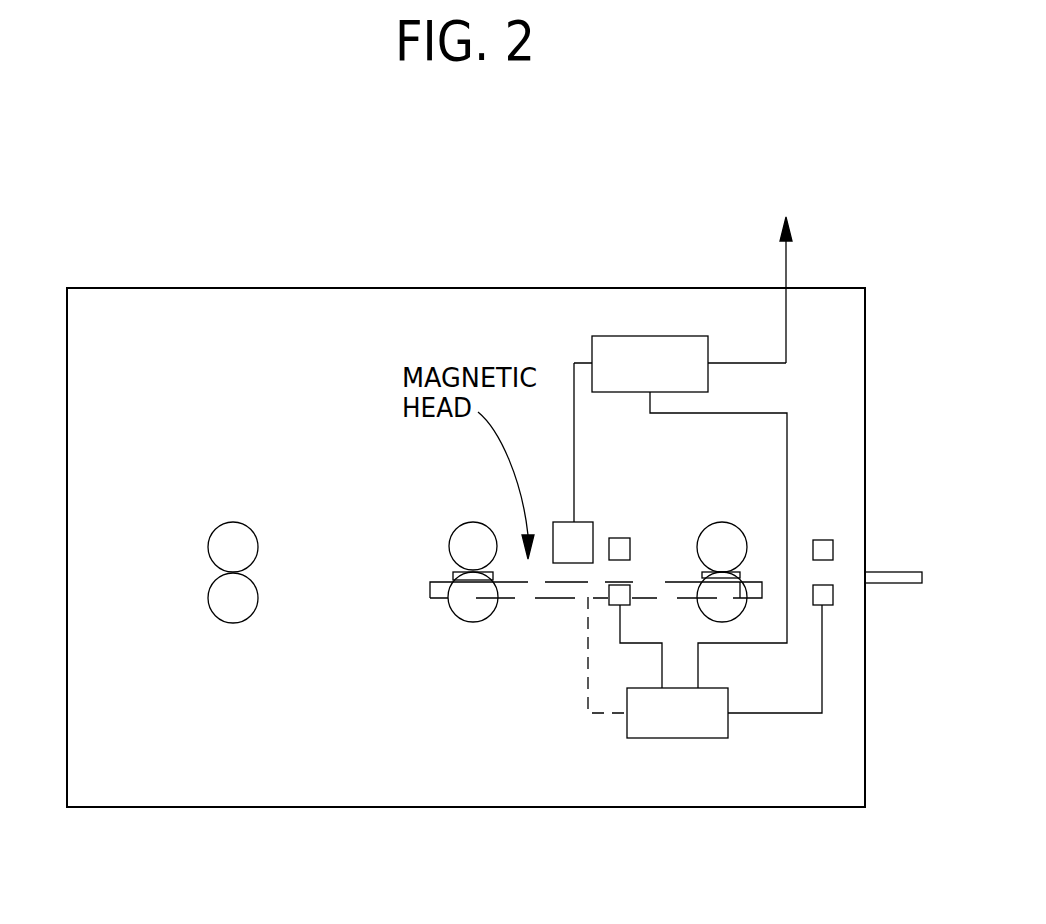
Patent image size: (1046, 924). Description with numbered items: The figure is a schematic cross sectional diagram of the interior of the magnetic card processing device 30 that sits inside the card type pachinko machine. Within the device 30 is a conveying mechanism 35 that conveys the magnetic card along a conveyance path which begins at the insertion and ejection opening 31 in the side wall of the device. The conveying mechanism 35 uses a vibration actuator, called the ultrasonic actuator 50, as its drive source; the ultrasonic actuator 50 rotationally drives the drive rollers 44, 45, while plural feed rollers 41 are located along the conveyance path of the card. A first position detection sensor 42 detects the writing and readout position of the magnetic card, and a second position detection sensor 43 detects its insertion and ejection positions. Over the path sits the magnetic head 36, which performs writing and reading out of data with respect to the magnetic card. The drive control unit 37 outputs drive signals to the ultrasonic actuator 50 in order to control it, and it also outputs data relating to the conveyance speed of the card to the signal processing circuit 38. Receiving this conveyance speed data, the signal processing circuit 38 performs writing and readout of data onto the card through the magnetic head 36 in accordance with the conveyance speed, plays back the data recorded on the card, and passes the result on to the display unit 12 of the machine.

The display unit 12 is at (785, 270).
The magnetic card processing device 30 is at (374, 240).
The card insertion slot 31 is at (885, 585).
The conveying mechanism 35 is at (553, 530).
The magnetic head 36 is at (567, 527).
The drive control unit 37 is at (668, 720).
The signal processing circuit 38 is at (667, 353).
The feed rollers 41 is at (468, 608).
The first position detection sensor 42 is at (632, 589).
The second position detection sensor 43 is at (823, 584).
The drive roller 44 is at (727, 537).
The drive roller 45 is at (455, 543).
The ultrasonic actuator 50 is at (428, 610).